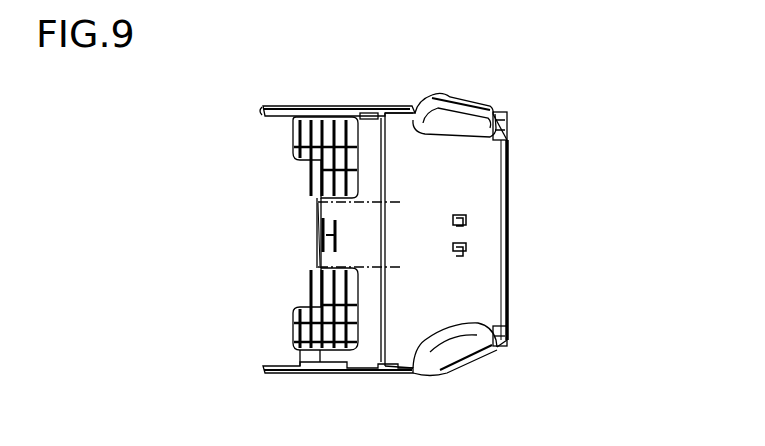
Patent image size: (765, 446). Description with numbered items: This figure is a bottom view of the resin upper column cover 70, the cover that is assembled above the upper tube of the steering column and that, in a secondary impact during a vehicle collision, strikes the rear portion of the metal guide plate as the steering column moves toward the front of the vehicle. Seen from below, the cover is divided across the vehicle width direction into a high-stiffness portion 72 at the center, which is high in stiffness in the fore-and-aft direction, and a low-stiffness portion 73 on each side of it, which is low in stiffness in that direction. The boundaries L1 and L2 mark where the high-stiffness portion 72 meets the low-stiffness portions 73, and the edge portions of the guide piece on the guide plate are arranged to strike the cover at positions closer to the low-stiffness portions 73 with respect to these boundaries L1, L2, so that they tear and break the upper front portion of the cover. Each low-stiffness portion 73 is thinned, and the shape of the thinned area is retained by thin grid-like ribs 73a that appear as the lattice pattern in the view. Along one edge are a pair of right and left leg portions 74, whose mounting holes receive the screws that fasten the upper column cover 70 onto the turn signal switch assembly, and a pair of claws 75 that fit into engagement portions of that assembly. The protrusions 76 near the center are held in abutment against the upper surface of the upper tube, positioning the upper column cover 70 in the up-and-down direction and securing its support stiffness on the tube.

The upper column cover 70 is at (512, 196).
The high-stiffness portion 72 is at (322, 235).
The low-stiffness portion 73 is at (318, 173).
The grid-like rib 73a is at (348, 170).
The leg portion 74 is at (509, 127).
The claw 75 is at (467, 220).
The protrusion 76 is at (337, 224).
The boundary L1 is at (388, 268).
The boundary L2 is at (388, 203).